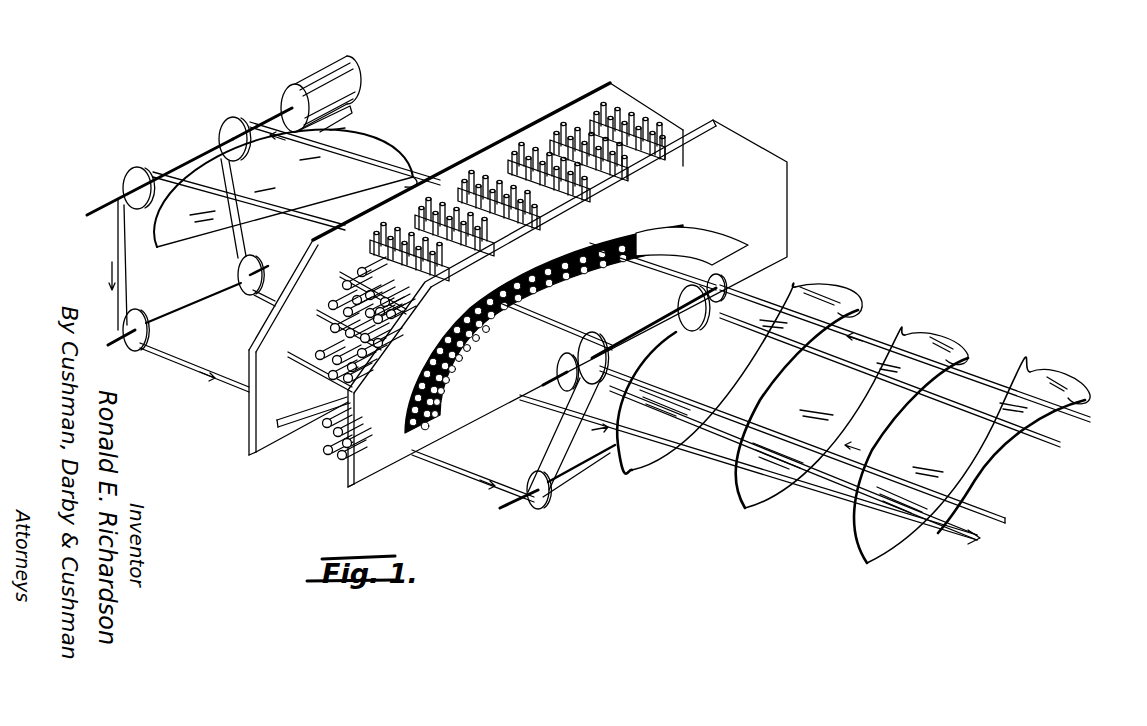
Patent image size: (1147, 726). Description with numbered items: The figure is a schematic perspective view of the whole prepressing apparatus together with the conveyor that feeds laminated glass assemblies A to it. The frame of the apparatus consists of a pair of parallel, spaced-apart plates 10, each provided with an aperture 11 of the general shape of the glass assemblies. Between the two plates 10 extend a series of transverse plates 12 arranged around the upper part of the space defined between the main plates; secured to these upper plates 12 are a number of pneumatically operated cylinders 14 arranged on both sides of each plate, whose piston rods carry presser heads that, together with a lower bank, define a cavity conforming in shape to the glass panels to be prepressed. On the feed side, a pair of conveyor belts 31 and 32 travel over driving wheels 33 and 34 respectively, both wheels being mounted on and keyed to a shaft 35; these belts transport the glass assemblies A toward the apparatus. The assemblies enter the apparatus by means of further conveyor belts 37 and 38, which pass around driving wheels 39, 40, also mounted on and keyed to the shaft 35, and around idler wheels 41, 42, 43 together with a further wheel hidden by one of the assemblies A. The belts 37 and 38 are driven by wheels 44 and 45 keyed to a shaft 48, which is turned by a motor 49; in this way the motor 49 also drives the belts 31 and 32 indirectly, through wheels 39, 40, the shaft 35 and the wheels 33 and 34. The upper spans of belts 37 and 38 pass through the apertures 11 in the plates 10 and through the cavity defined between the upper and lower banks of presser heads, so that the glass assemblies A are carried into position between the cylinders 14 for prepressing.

The plates 10 is at (640, 110).
The aperture 11 is at (718, 238).
The transverse plates 12 is at (392, 230).
The pneumatically operated cylinders 14 is at (577, 140).
The conveyor belt 31 is at (980, 377).
The conveyor belt 32 is at (983, 510).
The driving wheel 33 is at (722, 279).
The driving wheel 34 is at (556, 372).
The shaft 35 is at (650, 325).
The conveyor belt 37 is at (257, 300).
The conveyor belt 38 is at (167, 363).
The driving wheel 39 is at (690, 322).
The driving wheel 40 is at (610, 355).
The idler wheel 41 is at (537, 478).
The idler wheel 42 is at (137, 322).
The idler wheel 43 is at (238, 275).
The wheel 44 is at (228, 125).
The wheel 45 is at (120, 186).
The shaft 48 is at (188, 165).
The motor 49 is at (345, 84).
The glass assemblies A is at (900, 569).